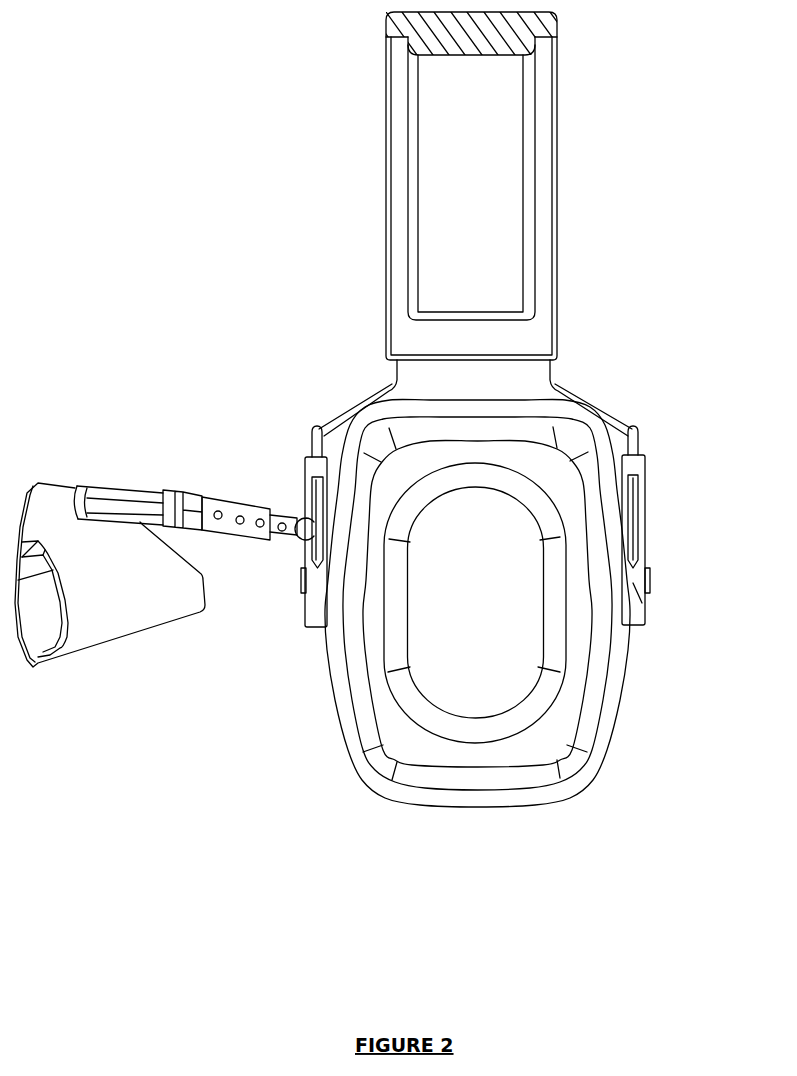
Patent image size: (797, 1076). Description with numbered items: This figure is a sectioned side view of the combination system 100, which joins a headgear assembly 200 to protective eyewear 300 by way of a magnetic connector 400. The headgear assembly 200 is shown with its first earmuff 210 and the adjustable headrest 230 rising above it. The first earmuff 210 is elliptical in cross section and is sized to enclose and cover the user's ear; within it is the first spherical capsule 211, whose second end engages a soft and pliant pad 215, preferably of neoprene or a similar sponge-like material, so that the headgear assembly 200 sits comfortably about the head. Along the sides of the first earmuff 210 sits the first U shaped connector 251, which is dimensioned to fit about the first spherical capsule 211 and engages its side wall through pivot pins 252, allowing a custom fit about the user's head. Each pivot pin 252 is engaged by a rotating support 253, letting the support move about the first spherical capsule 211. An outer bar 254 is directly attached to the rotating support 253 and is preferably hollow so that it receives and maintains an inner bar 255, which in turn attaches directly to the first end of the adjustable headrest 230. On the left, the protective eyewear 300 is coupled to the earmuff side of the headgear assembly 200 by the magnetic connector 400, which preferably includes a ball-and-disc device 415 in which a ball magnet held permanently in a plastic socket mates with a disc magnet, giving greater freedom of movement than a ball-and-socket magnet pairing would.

The combination system 100 is at (503, 255).
The headgear assembly 200 is at (508, 743).
The first earmuff 210 is at (588, 765).
The first spherical capsule 211 is at (512, 663).
The soft and pliant pad 215 is at (603, 728).
The adjustable headrest 230 is at (493, 182).
The first U shaped connector 251 is at (600, 407).
The pivot pin 252 is at (646, 578).
The rotating support 253 is at (646, 606).
The outer bar 254 is at (641, 508).
The inner bar 255 is at (636, 438).
The protective eyewear 300 is at (103, 620).
The magnetic connector 400 is at (300, 542).
The ball-and-disc device 415 is at (302, 513).